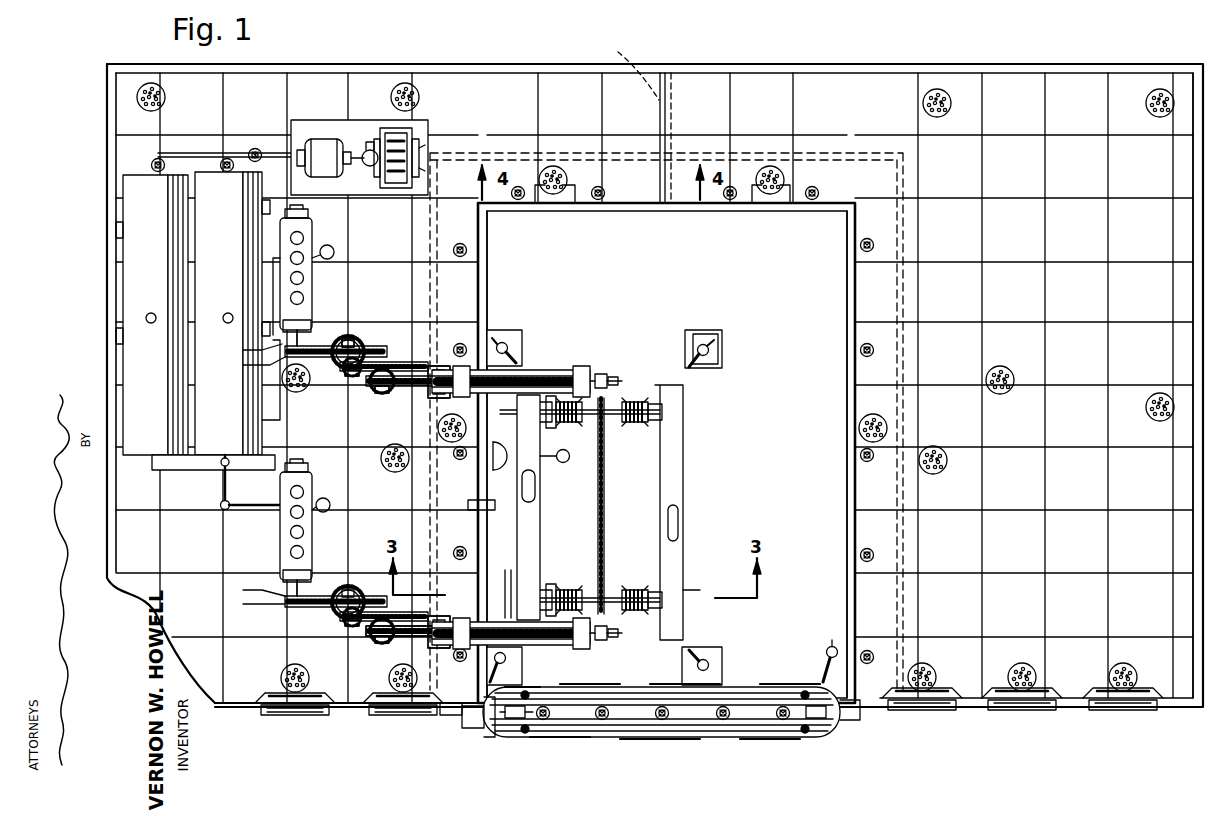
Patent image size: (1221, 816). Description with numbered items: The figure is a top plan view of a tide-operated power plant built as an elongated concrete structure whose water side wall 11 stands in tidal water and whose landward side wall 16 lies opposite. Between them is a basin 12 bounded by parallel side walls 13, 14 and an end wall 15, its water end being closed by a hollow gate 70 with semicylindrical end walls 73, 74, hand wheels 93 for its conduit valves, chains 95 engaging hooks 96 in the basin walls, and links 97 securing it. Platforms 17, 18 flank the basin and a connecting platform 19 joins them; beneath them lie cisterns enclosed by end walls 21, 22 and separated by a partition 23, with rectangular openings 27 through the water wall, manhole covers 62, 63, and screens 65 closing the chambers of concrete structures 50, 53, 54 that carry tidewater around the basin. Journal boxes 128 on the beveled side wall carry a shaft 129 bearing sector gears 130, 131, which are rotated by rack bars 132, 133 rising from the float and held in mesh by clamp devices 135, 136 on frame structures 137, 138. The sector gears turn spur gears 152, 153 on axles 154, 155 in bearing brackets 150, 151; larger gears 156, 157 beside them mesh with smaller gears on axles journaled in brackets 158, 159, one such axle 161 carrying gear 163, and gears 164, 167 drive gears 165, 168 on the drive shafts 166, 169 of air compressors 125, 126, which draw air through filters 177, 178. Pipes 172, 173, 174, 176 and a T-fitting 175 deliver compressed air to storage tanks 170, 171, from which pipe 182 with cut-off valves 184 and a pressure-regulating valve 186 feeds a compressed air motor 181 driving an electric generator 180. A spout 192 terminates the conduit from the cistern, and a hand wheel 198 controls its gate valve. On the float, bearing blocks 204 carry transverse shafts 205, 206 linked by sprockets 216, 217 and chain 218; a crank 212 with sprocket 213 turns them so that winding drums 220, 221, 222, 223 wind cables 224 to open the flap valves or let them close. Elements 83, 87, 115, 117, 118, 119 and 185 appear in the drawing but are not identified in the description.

The water side wall 11 is at (251, 708).
The basin 12 is at (818, 238).
The basin side wall 13 is at (490, 302).
The basin side wall 14 is at (847, 290).
The basin end wall 15 is at (701, 211).
The landward side wall 16 is at (663, 73).
The platform 17 is at (136, 568).
The platform 18 is at (1063, 95).
The connecting platform 19 is at (751, 90).
The end wall 21 is at (116, 343).
The end wall 22 is at (1193, 292).
The partition 23 is at (628, 69).
The openings 27 is at (305, 716).
The reinforced concrete structure 50 is at (430, 290).
The reinforced concrete structure 53 is at (905, 358).
The reinforced concrete structure 54 is at (618, 153).
The manhole covers 62 is at (333, 372).
The manhole covers 63 is at (282, 672).
The reinforced screens 65 is at (485, 742).
The gate 70 is at (697, 740).
The gate end wall 73 is at (470, 730).
The gate end wall 74 is at (848, 730).
The rivet 83 is at (523, 735).
The bracket 87 is at (455, 712).
The hand wheel 93 is at (548, 723).
The chains 95 is at (512, 686).
The hooks 96 is at (830, 648).
The links 97 is at (497, 732).
The mounting plate 115 is at (722, 352).
The mounting block 117 is at (701, 330).
The crank arm 118 is at (680, 355).
The crank pivot 119 is at (722, 345).
The air compressor 125 is at (312, 228).
The air compressor 126 is at (312, 480).
The journal boxes 128 is at (474, 507).
The shaft 129 is at (520, 520).
The sector gear 130 is at (535, 370).
The sector gear 131 is at (570, 640).
The rack bar 132 is at (620, 378).
The rack bar 133 is at (606, 645).
The clamp device 135 is at (604, 374).
The clamp device 136 is at (688, 652).
The frame structure 137 is at (568, 370).
The frame structure 138 is at (503, 598).
The bearing brackets 150 is at (400, 362).
The bearing brackets 151 is at (400, 614).
The spur gear 152 is at (380, 392).
The spur gear 153 is at (380, 645).
The axle 154 is at (392, 396).
The axle 155 is at (385, 643).
The gear 156 is at (440, 366).
The gear 157 is at (375, 638).
The bearing brackets 158 is at (353, 343).
The bearing brackets 159 is at (350, 596).
The axle 161 is at (345, 628).
The gear 163 is at (340, 615).
The gear 164 is at (301, 345).
The gear 165 is at (282, 367).
The drive shaft 166 is at (275, 345).
The gear 167 is at (320, 596).
The gear 168 is at (285, 601).
The drive shaft 169 is at (285, 590).
The compressed air storage tank 170 is at (130, 293).
The compressed air storage tank 171 is at (196, 405).
The compressed air pipe 172 is at (276, 425).
The compressed air pipe 173 is at (172, 470).
The compressed air pipe 174 is at (222, 455).
The T-fitting 175 is at (221, 501).
The pipe 176 is at (255, 512).
The air filter and cleaner 177 is at (335, 247).
The air filter and cleaner 178 is at (331, 505).
The electric current generator 180 is at (396, 128).
The compressed air motor 181 is at (331, 140).
The pipe 182 is at (215, 152).
The cut-off valves 184 is at (156, 160).
The pipe fitting 185 is at (228, 171).
The pressure-regulating valve 186 is at (258, 149).
The spout 192 is at (490, 460).
The hand wheel 198 is at (455, 455).
The bearing blocks 204 is at (666, 600).
The shaft 205 is at (633, 422).
The shaft 206 is at (623, 590).
The crank 212 is at (510, 343).
The chain sprocket 213 is at (556, 463).
The chain sprocket 216 is at (598, 420).
The chain sprocket 217 is at (585, 592).
The chain 218 is at (605, 490).
The winding drum 220 is at (566, 422).
The winding drum 221 is at (684, 400).
The winding drum 222 is at (553, 588).
The winding drum 223 is at (630, 640).
The cables 224 is at (661, 595).